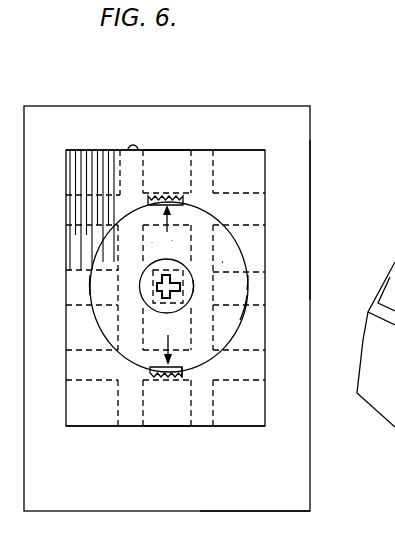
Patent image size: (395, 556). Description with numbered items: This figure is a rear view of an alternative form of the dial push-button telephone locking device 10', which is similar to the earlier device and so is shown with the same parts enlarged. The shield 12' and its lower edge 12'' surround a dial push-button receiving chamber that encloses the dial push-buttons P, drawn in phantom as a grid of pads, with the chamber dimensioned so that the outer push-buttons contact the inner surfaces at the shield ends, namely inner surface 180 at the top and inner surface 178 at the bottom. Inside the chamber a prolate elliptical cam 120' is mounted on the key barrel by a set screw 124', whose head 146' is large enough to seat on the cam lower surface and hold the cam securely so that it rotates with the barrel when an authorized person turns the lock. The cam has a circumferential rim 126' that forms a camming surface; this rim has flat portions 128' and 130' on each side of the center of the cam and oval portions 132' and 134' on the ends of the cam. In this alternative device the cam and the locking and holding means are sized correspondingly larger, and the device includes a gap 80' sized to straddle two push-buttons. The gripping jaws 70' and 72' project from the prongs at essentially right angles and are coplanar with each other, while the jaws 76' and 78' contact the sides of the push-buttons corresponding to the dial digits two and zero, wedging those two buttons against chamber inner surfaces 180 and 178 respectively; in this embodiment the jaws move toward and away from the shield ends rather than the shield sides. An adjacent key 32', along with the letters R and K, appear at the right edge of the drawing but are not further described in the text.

The telephone locking device 10' is at (177, 275).
The shield 12' is at (344, 220).
The shield 12'' is at (268, 533).
The chamber inner surface 180 is at (144, 148).
The chamber inner surface 178 is at (130, 425).
The gripping jaw 72' is at (106, 210).
The gripping jaw 78' is at (167, 171).
The gap 80' is at (208, 203).
The oval portion of cam rim 134' is at (172, 285).
The screw head 146' is at (186, 276).
The cam 120' is at (287, 244).
The circumferential rim 126' is at (298, 271).
The set screw 124' is at (249, 286).
The flat portion of cam rim 128' is at (272, 317).
The flat portion of cam rim 130' is at (56, 285).
The oval portion of cam rim 132' is at (129, 365).
The gripping jaw 70' is at (215, 366).
The gripping jaw 76' is at (167, 402).
The dial push-buttons P is at (152, 242).
The adjacent key 32' is at (376, 344).
The row indicator R is at (388, 84).
The key indicator K is at (387, 224).